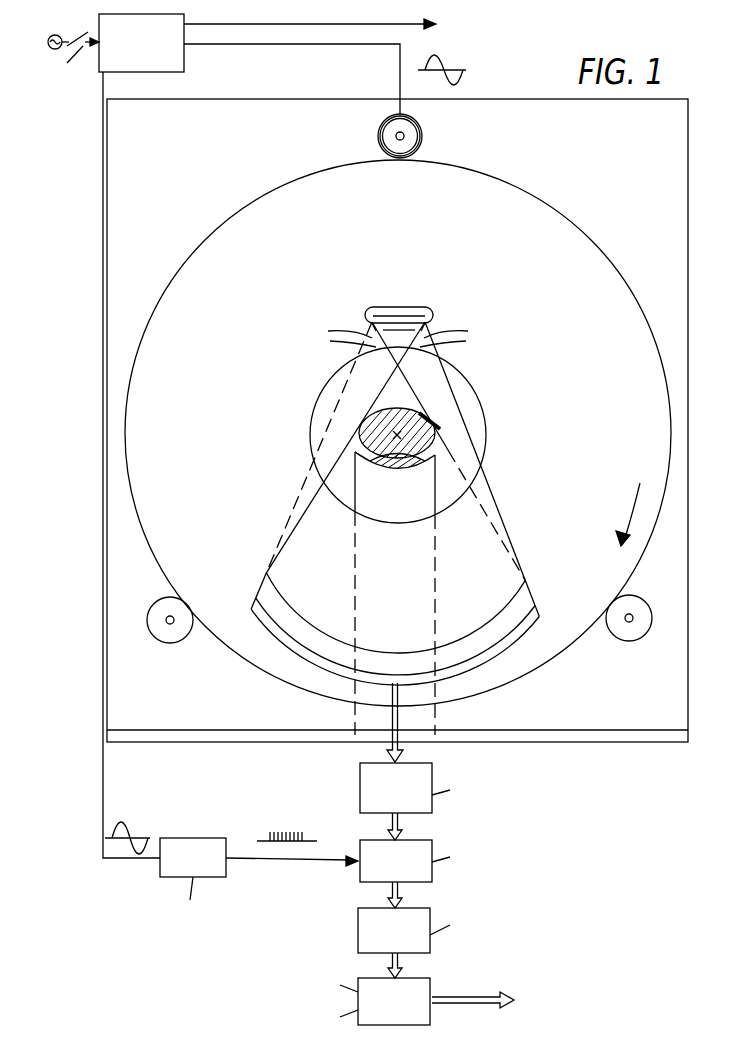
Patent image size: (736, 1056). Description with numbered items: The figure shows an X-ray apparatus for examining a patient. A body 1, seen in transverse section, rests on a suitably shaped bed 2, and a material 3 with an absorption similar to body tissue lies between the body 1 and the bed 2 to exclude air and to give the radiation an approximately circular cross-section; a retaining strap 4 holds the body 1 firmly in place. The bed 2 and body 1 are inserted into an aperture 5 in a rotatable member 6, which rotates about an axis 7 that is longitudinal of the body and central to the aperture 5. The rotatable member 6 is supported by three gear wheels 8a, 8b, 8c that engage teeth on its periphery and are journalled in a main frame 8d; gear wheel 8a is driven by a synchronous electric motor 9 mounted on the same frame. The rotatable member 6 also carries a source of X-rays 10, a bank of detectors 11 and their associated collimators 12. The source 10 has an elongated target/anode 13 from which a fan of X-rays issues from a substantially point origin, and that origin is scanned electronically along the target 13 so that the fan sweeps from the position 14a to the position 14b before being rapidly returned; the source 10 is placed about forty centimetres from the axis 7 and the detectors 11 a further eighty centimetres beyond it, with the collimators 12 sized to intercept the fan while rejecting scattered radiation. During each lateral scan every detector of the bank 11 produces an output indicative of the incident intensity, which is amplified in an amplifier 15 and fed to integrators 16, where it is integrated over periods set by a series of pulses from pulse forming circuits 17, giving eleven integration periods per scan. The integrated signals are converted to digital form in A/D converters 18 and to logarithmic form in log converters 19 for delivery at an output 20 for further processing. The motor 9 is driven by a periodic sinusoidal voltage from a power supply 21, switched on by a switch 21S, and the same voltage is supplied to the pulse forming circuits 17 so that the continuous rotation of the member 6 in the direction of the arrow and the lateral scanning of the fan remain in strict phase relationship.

The body 1 is at (418, 420).
The bed 2 is at (395, 469).
The material 3 is at (380, 462).
The retaining strap 4 is at (438, 427).
The aperture 5 is at (477, 433).
The rotatable member 6 is at (625, 340).
The axis 7 is at (397, 430).
The gear wheel 8a is at (377, 130).
The gear wheel 8b is at (170, 643).
The gear wheel 8c is at (629, 641).
The main frame 8d is at (660, 712).
The synchronous electric motor 9 is at (423, 130).
The source of X-rays 10 is at (428, 313).
The bank of detectors 11 is at (487, 652).
The collimators 12 is at (537, 591).
The target/anode 13 is at (398, 307).
The position of X-ray fan 14a is at (463, 336).
The position of X-ray fan 14b is at (334, 336).
The amplifier 15 is at (360, 783).
The integrators 16 is at (360, 870).
The pulse forming circuits 17 is at (193, 838).
The A/D converters 18 is at (358, 932).
The log converters 19 is at (310, 996).
The output 20 is at (488, 1003).
The power supply 21 is at (177, 61).
The switch 21S is at (73, 64).